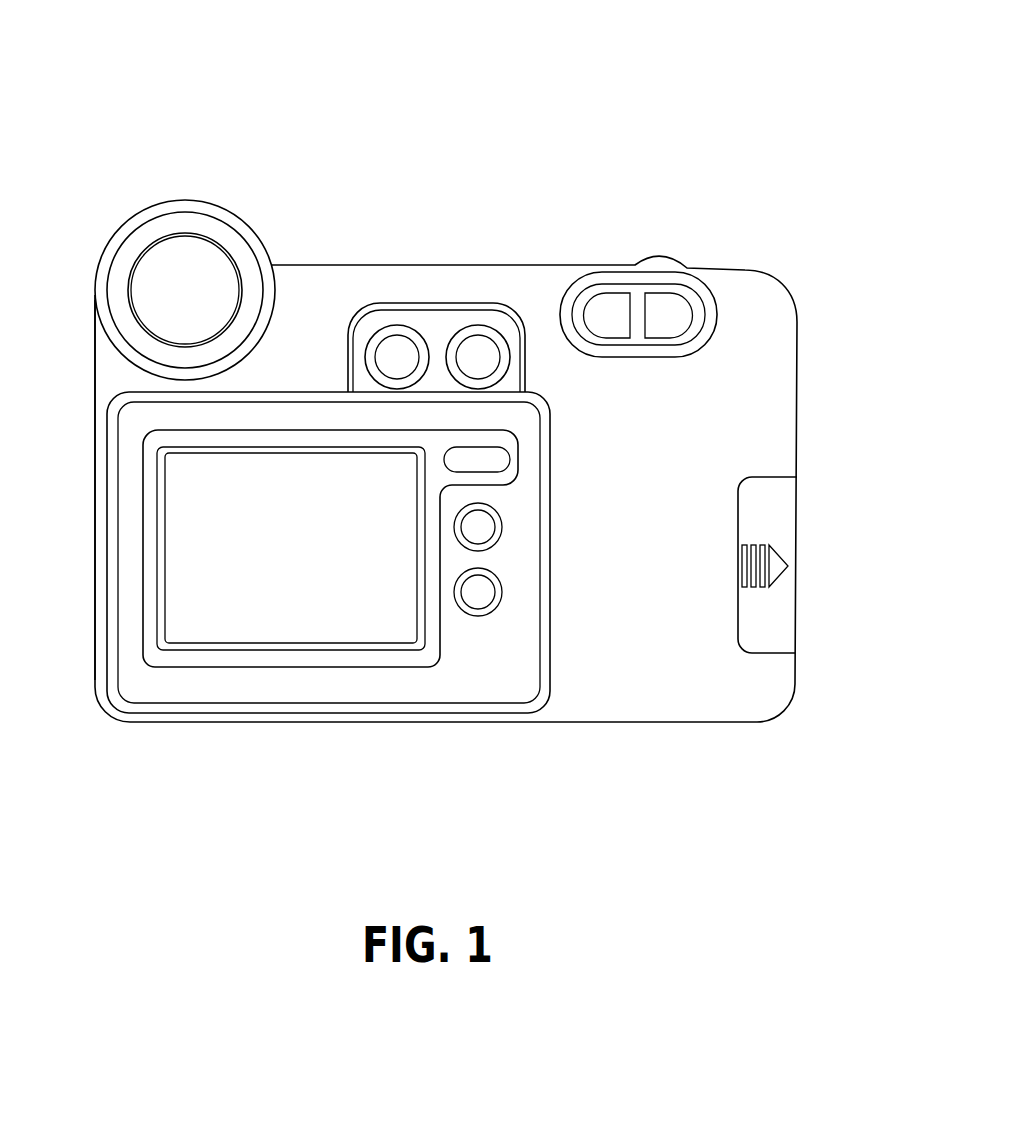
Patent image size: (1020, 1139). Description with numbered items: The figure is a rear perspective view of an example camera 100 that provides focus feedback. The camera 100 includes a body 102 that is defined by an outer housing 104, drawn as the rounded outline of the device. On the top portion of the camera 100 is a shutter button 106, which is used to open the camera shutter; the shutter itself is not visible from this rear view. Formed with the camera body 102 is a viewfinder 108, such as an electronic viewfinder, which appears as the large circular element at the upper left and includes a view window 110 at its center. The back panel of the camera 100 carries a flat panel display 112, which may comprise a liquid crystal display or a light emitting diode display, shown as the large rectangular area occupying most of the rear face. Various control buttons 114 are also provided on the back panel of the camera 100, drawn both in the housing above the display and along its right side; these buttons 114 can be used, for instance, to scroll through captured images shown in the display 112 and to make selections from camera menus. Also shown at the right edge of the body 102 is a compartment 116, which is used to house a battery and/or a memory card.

The camera 100 is at (795, 95).
The body 102 is at (812, 292).
The outer housing 104 is at (93, 368).
The shutter button 106 is at (665, 258).
The viewfinder 108 is at (258, 200).
The view window 110 is at (147, 288).
The flat panel display 112 is at (307, 558).
The control buttons 114 is at (542, 289).
The compartment 116 is at (787, 515).